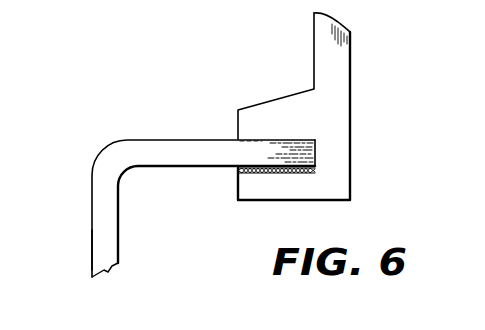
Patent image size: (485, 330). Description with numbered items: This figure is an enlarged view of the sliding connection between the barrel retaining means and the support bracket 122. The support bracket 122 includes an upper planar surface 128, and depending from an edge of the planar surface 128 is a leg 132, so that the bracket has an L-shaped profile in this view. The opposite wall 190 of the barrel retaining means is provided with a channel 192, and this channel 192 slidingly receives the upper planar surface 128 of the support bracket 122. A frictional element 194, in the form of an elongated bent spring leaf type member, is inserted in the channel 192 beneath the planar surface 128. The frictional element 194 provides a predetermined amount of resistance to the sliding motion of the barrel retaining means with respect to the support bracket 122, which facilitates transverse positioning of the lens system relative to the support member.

The support bracket 122 is at (171, 187).
The upper planar surface 128 is at (200, 139).
The leg 132 is at (91, 228).
The opposite wall 190 is at (350, 80).
The channel 192 is at (260, 173).
The frictional element 194 is at (238, 170).